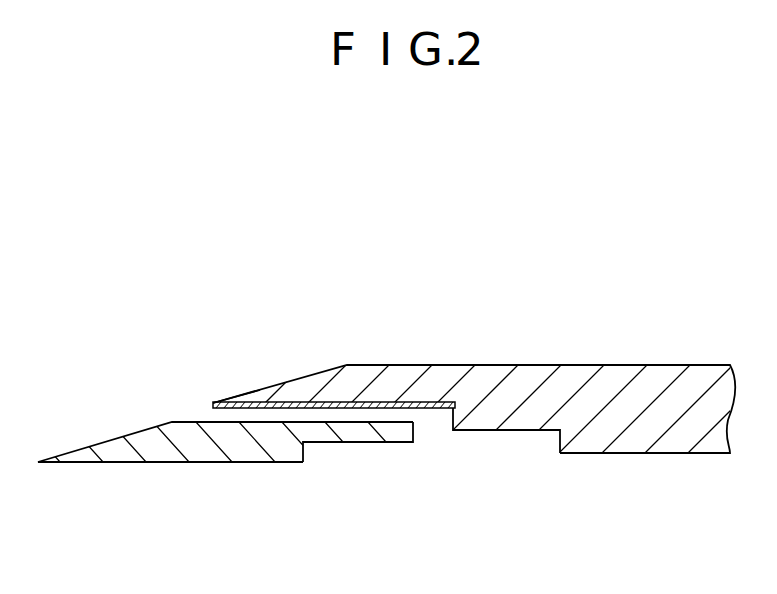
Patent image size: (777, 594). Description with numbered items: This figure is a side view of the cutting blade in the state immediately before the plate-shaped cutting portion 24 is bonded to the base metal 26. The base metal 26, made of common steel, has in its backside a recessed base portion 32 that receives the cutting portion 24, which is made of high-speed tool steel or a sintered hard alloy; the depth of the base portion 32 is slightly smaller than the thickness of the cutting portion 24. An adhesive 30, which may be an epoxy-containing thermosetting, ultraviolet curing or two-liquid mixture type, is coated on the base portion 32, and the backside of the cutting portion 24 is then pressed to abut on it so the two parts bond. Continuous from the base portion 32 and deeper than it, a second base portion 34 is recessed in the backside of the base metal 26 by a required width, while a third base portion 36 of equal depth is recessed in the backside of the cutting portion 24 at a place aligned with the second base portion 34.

The cutting portion 24 is at (172, 444).
The base metal 26 is at (597, 381).
The adhesive 30 is at (229, 404).
The base portion 32 is at (330, 406).
The second base portion 34 is at (500, 431).
The third base portion 36 is at (373, 445).